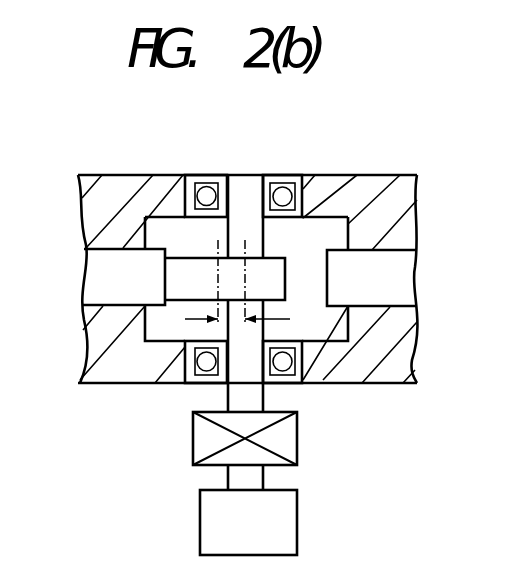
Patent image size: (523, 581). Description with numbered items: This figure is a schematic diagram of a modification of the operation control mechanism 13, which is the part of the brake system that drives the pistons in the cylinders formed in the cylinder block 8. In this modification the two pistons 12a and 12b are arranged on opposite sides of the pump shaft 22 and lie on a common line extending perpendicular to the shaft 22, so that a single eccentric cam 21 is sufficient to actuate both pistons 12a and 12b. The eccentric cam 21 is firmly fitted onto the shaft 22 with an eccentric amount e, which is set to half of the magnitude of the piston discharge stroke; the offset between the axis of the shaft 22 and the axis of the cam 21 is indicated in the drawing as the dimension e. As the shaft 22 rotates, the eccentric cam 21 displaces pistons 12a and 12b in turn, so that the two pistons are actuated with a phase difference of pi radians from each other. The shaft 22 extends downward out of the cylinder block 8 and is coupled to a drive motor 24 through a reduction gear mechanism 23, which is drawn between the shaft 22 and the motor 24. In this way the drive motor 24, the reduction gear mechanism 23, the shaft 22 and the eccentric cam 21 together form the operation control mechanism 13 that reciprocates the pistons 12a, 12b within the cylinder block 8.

The cylinder block 8 is at (100, 193).
The piston 12a is at (100, 267).
The piston 12b is at (390, 272).
The operation control mechanism 13 is at (416, 156).
The eccentric cam 21 is at (278, 266).
The pump shaft 22 is at (244, 197).
The reduction gear mechanism 23 is at (297, 430).
The drive motor 24 is at (297, 512).
The eccentric amount e is at (240, 318).